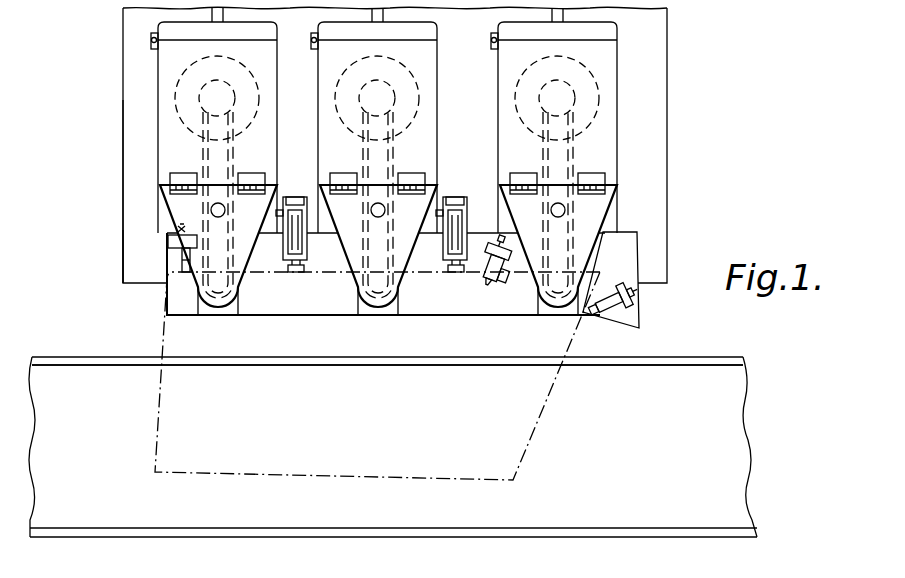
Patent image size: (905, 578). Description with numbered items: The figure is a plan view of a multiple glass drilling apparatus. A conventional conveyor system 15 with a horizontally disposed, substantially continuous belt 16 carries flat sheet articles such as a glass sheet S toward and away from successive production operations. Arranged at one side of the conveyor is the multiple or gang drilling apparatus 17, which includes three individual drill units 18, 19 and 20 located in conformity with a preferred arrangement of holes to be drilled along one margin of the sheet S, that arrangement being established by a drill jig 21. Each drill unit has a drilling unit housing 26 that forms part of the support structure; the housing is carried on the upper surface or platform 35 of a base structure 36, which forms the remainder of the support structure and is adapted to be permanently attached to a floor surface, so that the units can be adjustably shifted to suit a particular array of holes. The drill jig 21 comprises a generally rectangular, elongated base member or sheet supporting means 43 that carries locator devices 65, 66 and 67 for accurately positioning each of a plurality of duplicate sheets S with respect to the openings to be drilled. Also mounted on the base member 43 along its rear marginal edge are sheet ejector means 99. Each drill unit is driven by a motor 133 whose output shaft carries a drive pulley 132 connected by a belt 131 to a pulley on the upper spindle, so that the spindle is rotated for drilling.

The conveyor system 15 is at (88, 357).
The belt 16 is at (143, 393).
The multiple drilling apparatus 17 is at (155, 93).
The drill unit 18 is at (160, 130).
The drill unit 19 is at (332, 118).
The drill unit 20 is at (512, 118).
The drill jig 21 is at (332, 292).
The drilling unit housing 26 is at (170, 152).
The platform 35 is at (133, 206).
The base structure 36 is at (128, 235).
The base member 43 is at (455, 300).
The locator device 65 is at (180, 267).
The locator device 66 is at (491, 275).
The locator device 67 is at (611, 287).
The sheet ejector means 99 is at (279, 262).
The belt 131 is at (233, 147).
The drive pulley 132 is at (232, 128).
The motor 133 is at (187, 74).
The glass sheet S is at (172, 424).